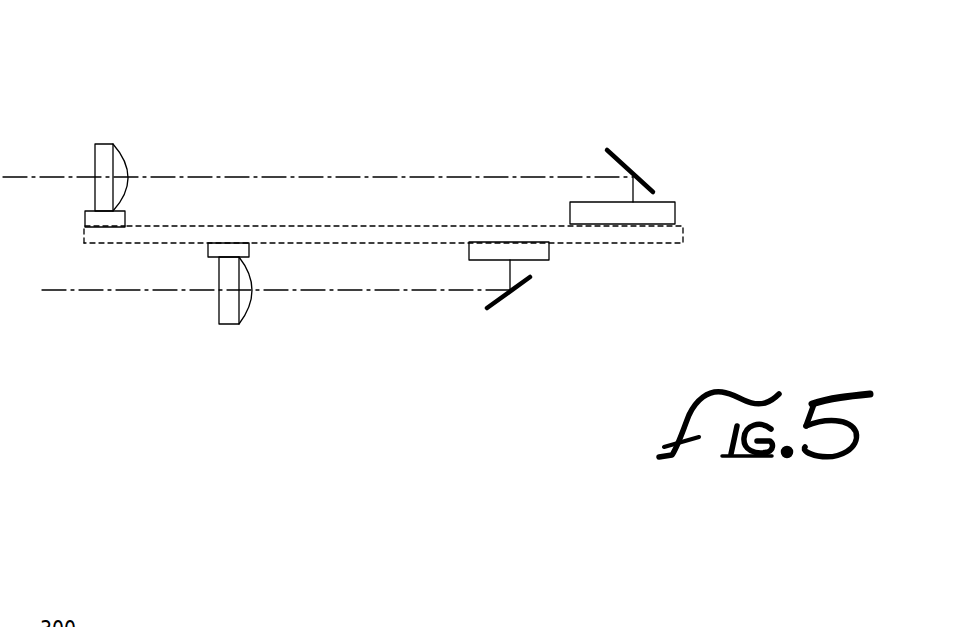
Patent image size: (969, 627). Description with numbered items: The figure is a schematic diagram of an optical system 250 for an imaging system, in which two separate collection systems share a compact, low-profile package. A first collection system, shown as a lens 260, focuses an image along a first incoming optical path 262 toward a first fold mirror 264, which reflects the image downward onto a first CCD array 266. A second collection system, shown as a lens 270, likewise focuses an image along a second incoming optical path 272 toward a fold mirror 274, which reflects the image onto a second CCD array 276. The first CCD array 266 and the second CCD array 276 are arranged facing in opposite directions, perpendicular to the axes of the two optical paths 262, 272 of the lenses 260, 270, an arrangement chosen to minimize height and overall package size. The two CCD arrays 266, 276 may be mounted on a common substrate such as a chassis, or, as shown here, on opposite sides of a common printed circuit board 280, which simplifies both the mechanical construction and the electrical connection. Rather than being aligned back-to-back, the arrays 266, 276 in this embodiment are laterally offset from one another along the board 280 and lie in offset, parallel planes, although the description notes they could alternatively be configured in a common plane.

The optical system 250 is at (192, 59).
The lens 260 is at (110, 145).
The first incoming optical path 262 is at (273, 177).
The first fold mirror 264 is at (617, 156).
The first CCD array 266 is at (667, 202).
The lens 270 is at (238, 325).
The second incoming optical path 272 is at (303, 291).
The fold mirror 274 is at (502, 300).
The second CCD array 276 is at (550, 250).
The printed circuit board 280 is at (686, 234).